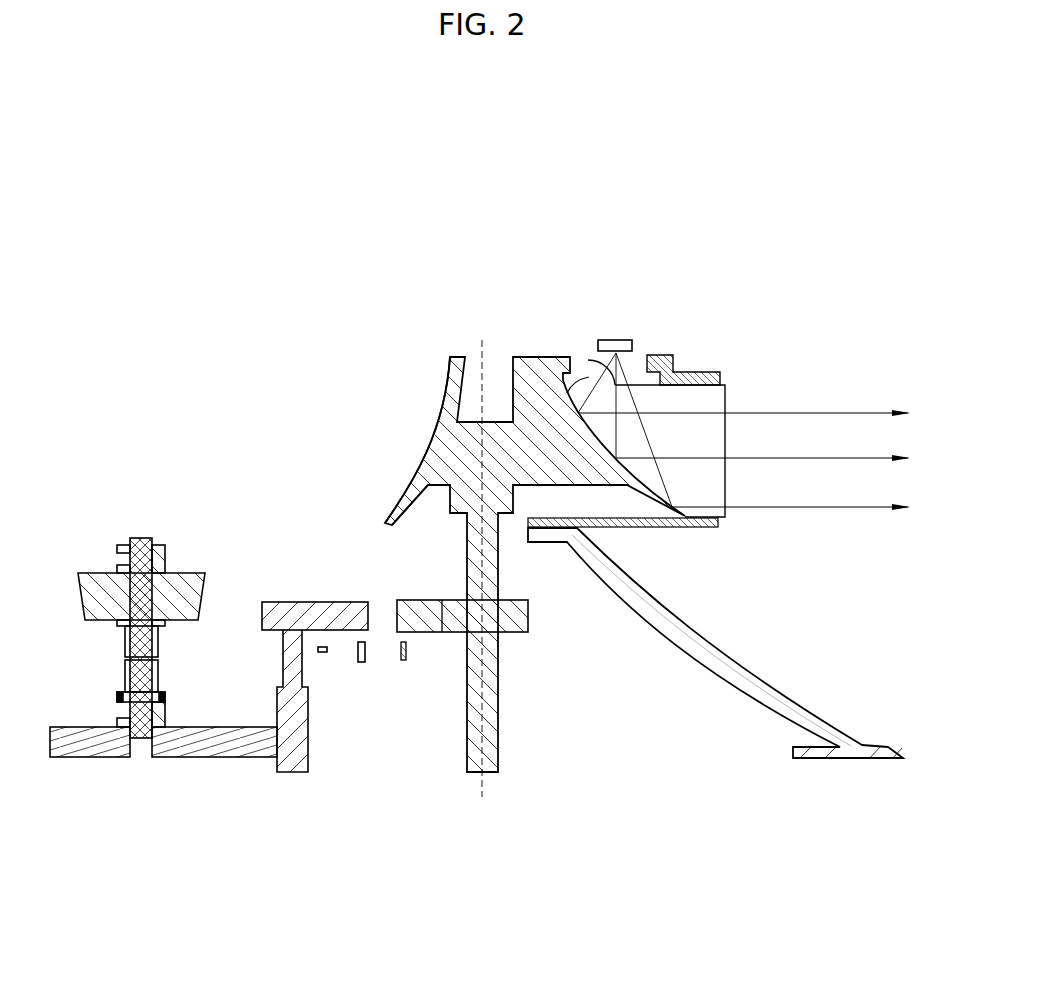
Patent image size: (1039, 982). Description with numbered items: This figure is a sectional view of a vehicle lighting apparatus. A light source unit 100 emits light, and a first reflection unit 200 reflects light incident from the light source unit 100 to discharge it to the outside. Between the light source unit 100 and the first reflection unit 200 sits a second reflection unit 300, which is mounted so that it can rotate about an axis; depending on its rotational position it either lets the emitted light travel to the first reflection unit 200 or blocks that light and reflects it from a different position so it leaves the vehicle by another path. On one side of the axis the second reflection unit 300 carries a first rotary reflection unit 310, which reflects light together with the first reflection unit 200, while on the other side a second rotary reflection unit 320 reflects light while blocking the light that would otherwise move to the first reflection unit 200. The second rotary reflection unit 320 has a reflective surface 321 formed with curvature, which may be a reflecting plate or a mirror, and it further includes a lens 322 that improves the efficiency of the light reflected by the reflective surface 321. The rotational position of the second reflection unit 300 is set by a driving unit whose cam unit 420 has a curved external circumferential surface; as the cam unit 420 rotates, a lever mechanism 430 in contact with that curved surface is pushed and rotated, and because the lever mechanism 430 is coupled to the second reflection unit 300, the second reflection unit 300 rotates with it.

The light source unit 100 is at (623, 340).
The first reflection unit 200 is at (768, 692).
The second reflection unit 300 is at (540, 348).
The first rotary reflection unit 310 is at (430, 450).
The second rotary reflection unit 320 is at (730, 195).
The reflective surface 321 is at (588, 360).
The lens 322 is at (727, 442).
The cam unit 420 is at (213, 745).
The lever mechanism 430 is at (292, 763).